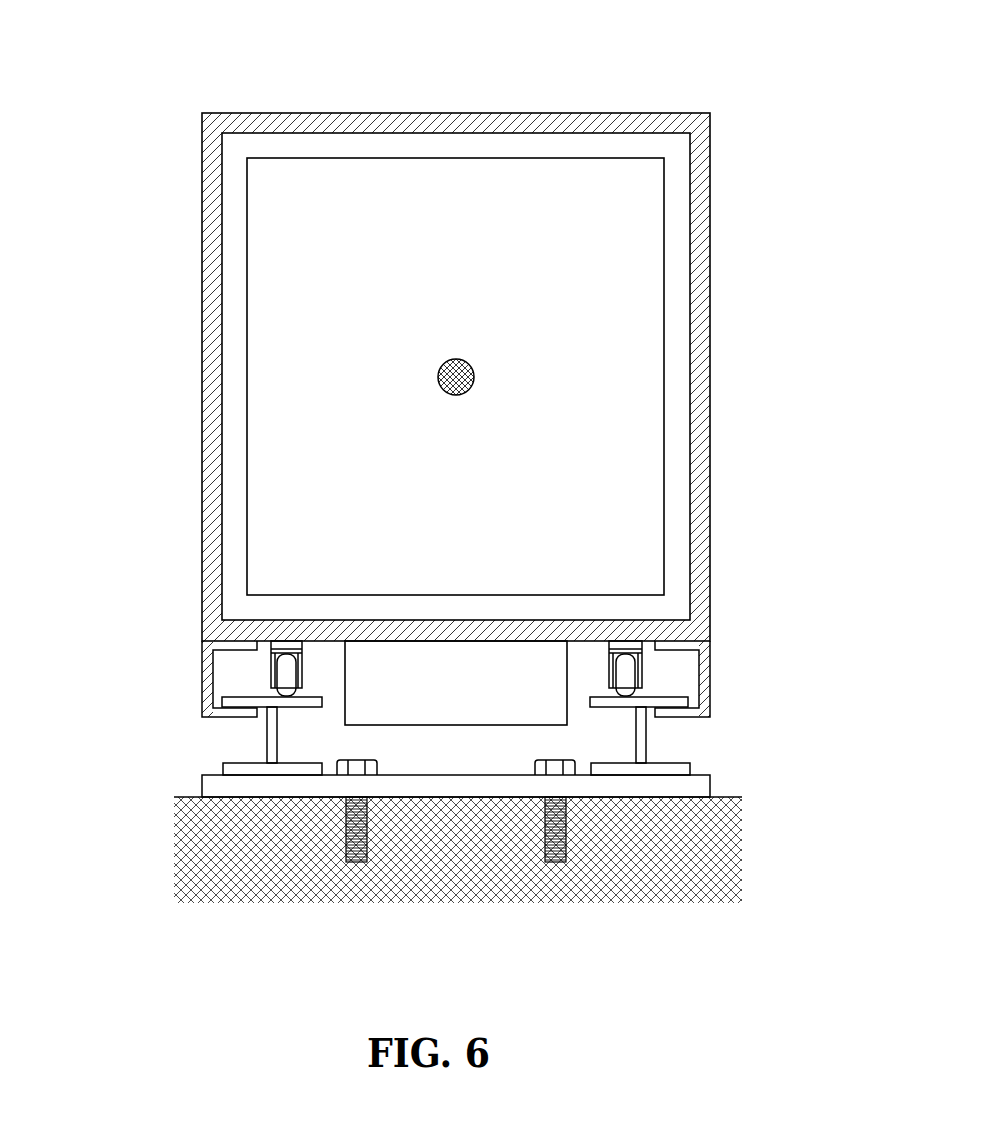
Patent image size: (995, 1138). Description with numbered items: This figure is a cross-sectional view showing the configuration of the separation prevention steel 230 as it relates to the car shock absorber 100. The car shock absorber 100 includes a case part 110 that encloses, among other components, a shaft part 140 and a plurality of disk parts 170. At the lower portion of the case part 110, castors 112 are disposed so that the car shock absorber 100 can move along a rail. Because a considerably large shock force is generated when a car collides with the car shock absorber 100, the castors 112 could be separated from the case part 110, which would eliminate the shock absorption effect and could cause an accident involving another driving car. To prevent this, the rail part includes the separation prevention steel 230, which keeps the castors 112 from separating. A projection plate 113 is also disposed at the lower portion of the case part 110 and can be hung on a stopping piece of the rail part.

The car shock absorber 100 is at (719, 96).
The case part 110 is at (213, 238).
The castors 112 is at (288, 667).
The projection plate 113 is at (450, 705).
The shaft part 140 is at (453, 362).
The disk parts 170 is at (247, 377).
The separation prevention steel 230 is at (208, 682).